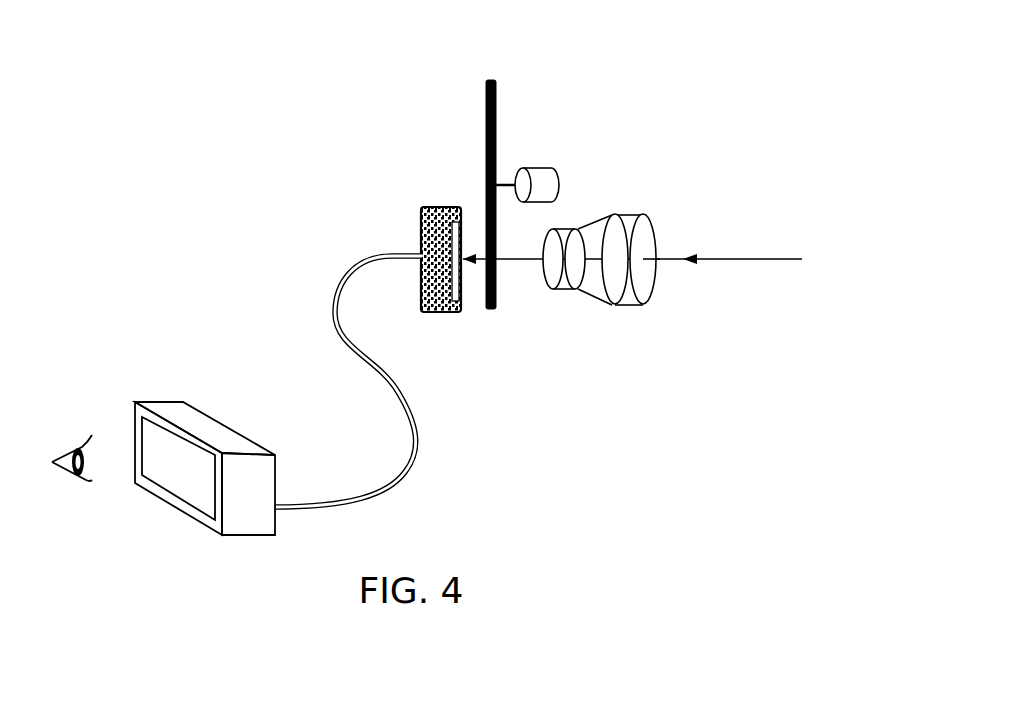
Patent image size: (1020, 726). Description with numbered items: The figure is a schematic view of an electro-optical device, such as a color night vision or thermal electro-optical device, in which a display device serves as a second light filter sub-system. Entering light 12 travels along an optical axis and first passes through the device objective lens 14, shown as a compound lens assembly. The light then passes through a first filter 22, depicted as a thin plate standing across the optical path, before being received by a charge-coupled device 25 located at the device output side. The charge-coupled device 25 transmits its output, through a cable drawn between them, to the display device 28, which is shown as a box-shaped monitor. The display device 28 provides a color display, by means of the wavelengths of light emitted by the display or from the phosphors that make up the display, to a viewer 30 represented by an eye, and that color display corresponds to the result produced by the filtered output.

The entering light 12 is at (742, 261).
The device objective lens 14 is at (628, 215).
The first filter 22 is at (537, 86).
The charge-coupled device 25 is at (437, 313).
The display device 28 is at (164, 402).
The observer eye 30 is at (70, 468).